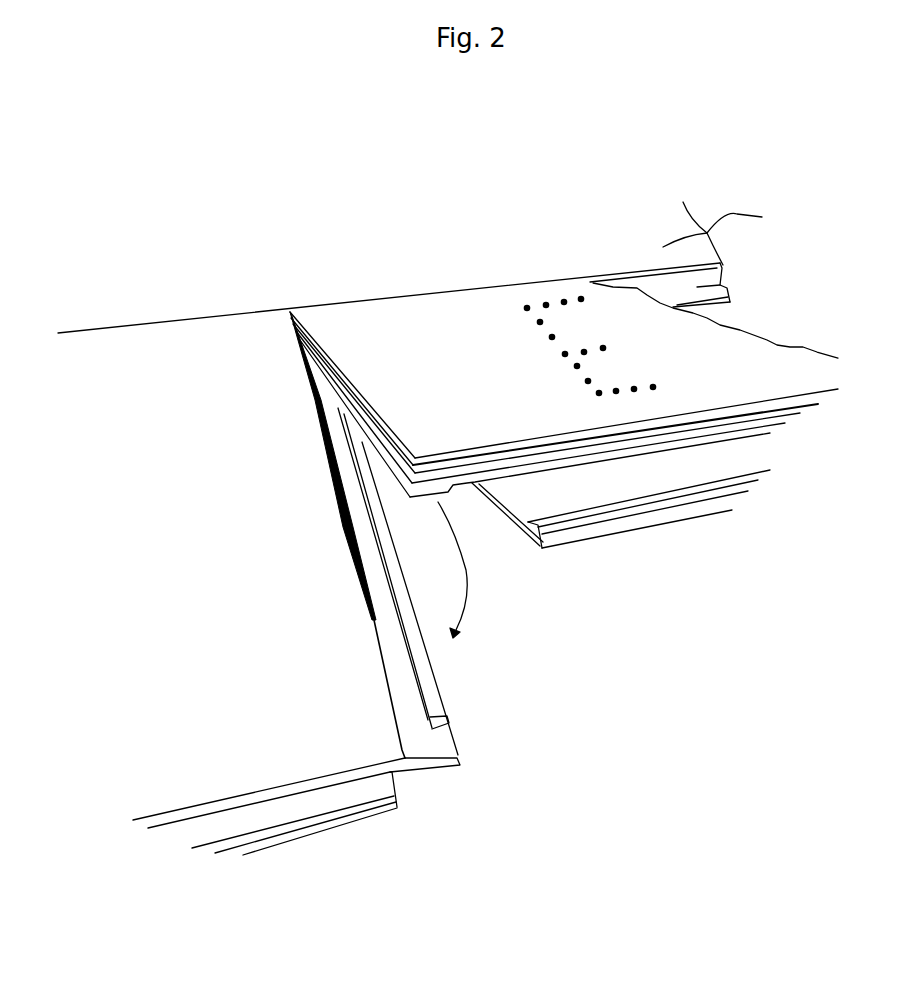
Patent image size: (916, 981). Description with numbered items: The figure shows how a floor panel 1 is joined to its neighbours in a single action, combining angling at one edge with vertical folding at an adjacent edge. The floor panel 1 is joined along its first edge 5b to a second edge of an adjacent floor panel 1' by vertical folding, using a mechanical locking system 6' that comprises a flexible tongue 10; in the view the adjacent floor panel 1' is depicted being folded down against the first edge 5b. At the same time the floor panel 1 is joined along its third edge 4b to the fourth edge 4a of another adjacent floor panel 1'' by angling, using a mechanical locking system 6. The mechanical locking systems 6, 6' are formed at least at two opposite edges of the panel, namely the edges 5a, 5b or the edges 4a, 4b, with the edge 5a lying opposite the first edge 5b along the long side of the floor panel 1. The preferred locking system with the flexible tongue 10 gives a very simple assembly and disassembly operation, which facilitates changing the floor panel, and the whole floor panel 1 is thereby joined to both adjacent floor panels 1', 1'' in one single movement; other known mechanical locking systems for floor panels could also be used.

The floor panel 1 is at (624, 381).
The adjacent floor panel 1' is at (259, 556).
The another adjacent floor panel 1'' is at (715, 234).
The fourth edge 4a is at (729, 239).
The third edge 4b is at (558, 290).
The edge 5a is at (247, 322).
The first edge 5b is at (317, 317).
The mechanical locking system 6 is at (753, 275).
The mechanical locking system 6' is at (429, 581).
The flexible tongue 10 is at (373, 540).